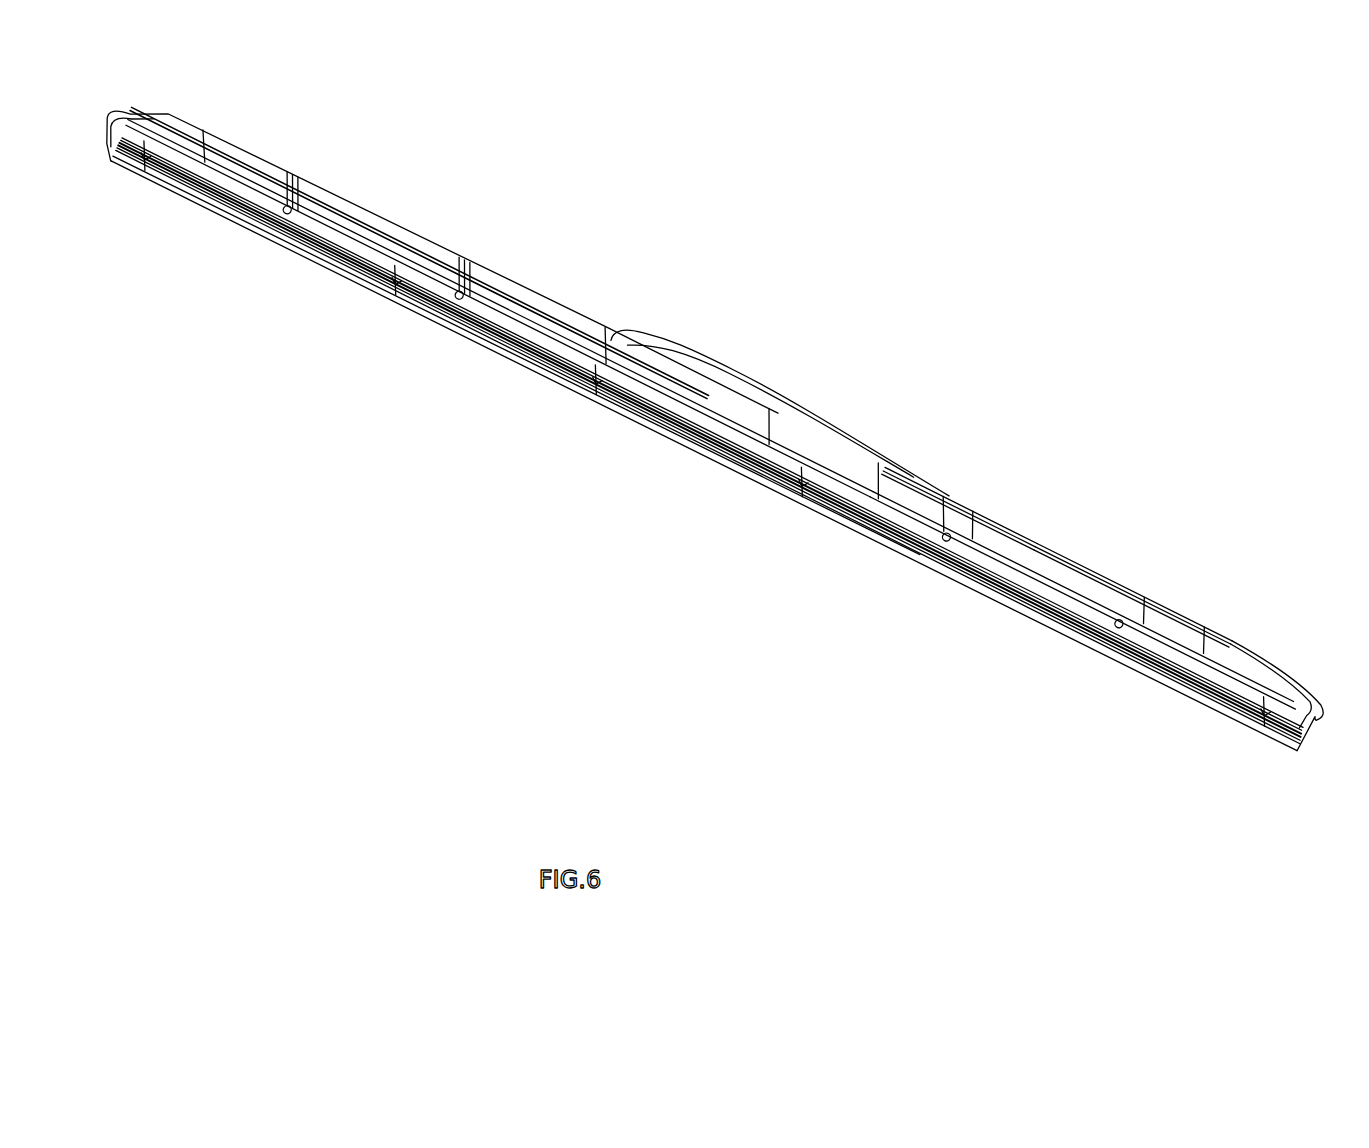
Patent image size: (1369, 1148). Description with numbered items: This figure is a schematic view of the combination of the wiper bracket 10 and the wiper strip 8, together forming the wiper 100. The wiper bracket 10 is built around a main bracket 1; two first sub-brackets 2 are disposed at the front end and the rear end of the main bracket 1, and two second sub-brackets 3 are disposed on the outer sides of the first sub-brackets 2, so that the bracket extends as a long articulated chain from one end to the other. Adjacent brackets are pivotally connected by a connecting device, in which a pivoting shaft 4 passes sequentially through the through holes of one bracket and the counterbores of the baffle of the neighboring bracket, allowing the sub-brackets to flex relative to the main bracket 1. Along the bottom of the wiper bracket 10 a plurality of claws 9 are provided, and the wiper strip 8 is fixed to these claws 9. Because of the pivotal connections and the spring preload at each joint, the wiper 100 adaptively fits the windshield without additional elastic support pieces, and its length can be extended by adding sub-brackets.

The wiper 100 is at (703, 426).
The main bracket 1 is at (1033, 517).
The first sub-bracket 2 is at (1110, 586).
The second sub-bracket 3 is at (1256, 656).
The pivoting shaft 4 is at (288, 203).
The wiper strip 8 is at (1200, 715).
The claw 9 is at (137, 170).
The wiper bracket 10 is at (973, 534).